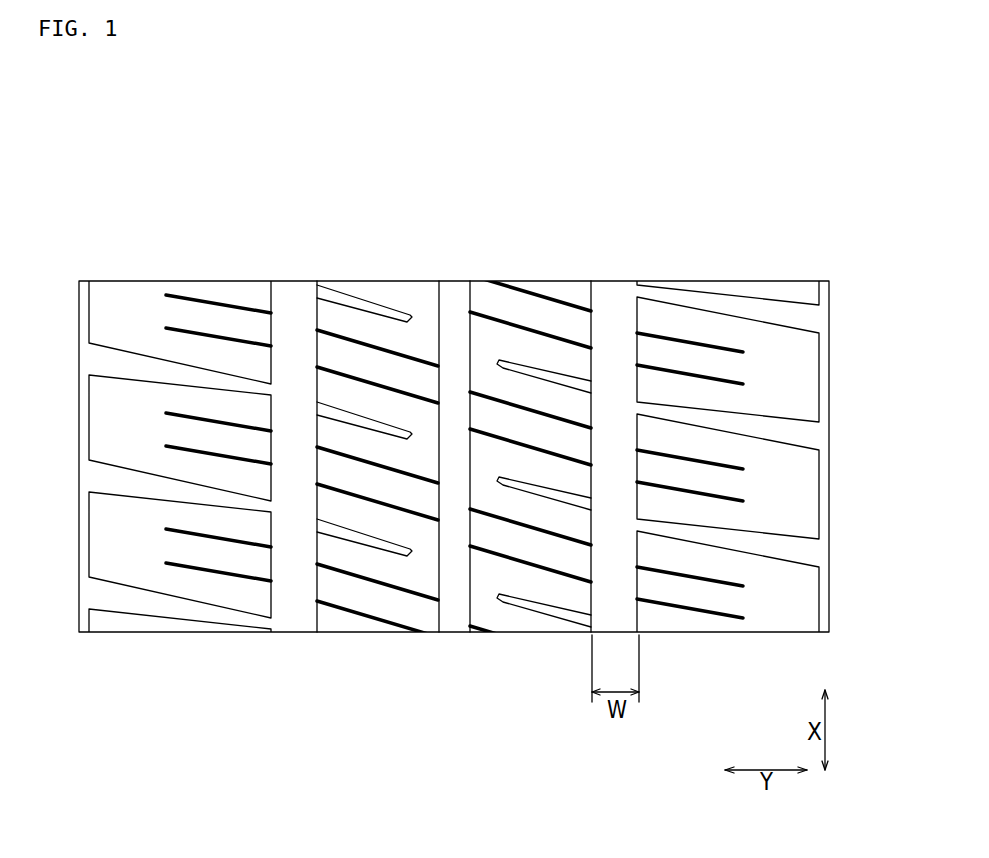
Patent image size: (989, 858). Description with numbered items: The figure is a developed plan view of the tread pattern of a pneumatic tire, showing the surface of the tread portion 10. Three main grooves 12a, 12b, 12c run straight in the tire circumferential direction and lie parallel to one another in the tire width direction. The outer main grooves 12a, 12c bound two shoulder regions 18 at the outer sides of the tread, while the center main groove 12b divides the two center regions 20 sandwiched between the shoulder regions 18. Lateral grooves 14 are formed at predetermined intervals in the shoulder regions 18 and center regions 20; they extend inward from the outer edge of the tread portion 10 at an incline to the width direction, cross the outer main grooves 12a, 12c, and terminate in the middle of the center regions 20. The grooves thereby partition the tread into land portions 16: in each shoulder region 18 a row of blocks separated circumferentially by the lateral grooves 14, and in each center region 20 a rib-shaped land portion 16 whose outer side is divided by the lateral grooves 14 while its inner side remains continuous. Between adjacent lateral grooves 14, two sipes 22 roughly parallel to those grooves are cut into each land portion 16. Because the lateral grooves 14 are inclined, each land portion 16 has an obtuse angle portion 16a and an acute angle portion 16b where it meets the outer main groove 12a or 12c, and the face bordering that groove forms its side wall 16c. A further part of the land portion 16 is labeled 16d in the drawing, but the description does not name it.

The tread portion 10 is at (470, 108).
The outer main groove 12a is at (303, 610).
The center main groove 12b is at (453, 620).
The outer main groove 12c is at (624, 313).
The lateral groove 14 is at (192, 378).
The land portion 16 is at (137, 305).
The obtuse angle portion 16a is at (320, 397).
The acute angle portion 16b is at (318, 297).
The side wall 16c is at (316, 353).
The sipe portion 16d is at (357, 362).
The shoulder region 18 is at (162, 637).
The center region 20 is at (398, 637).
The sipe 22 is at (672, 372).